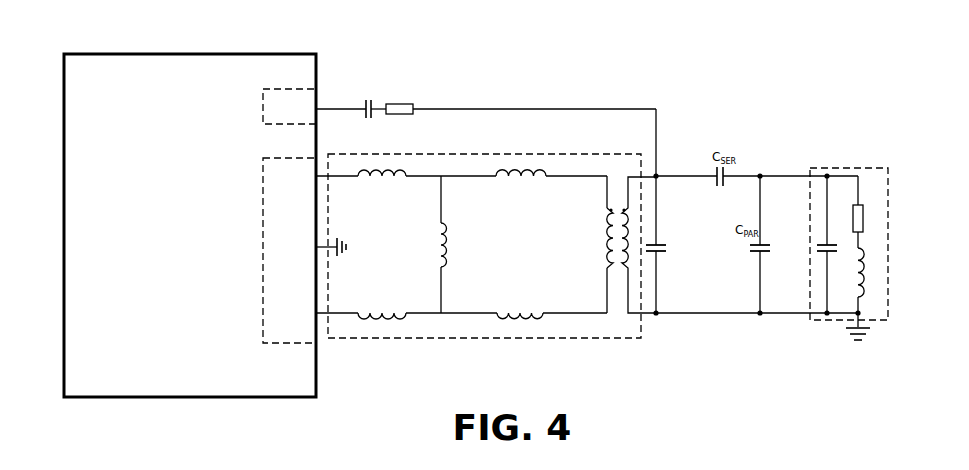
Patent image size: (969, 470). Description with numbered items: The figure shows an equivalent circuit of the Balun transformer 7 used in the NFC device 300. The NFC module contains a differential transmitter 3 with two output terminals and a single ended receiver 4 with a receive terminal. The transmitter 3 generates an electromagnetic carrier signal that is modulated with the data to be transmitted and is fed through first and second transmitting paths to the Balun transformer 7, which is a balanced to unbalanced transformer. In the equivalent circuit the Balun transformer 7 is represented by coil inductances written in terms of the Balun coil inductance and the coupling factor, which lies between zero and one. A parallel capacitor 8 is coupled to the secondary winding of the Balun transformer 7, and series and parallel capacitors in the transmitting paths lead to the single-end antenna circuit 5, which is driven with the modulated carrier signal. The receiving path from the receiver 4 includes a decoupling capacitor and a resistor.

The NFC device 300 is at (538, 83).
The differential transmitter 3 is at (262, 270).
The single ended receiver 4 is at (263, 89).
The Balun transformer 7 is at (557, 153).
The parallel capacitor CEMC 8 is at (665, 240).
The antenna circuit 5 is at (846, 168).